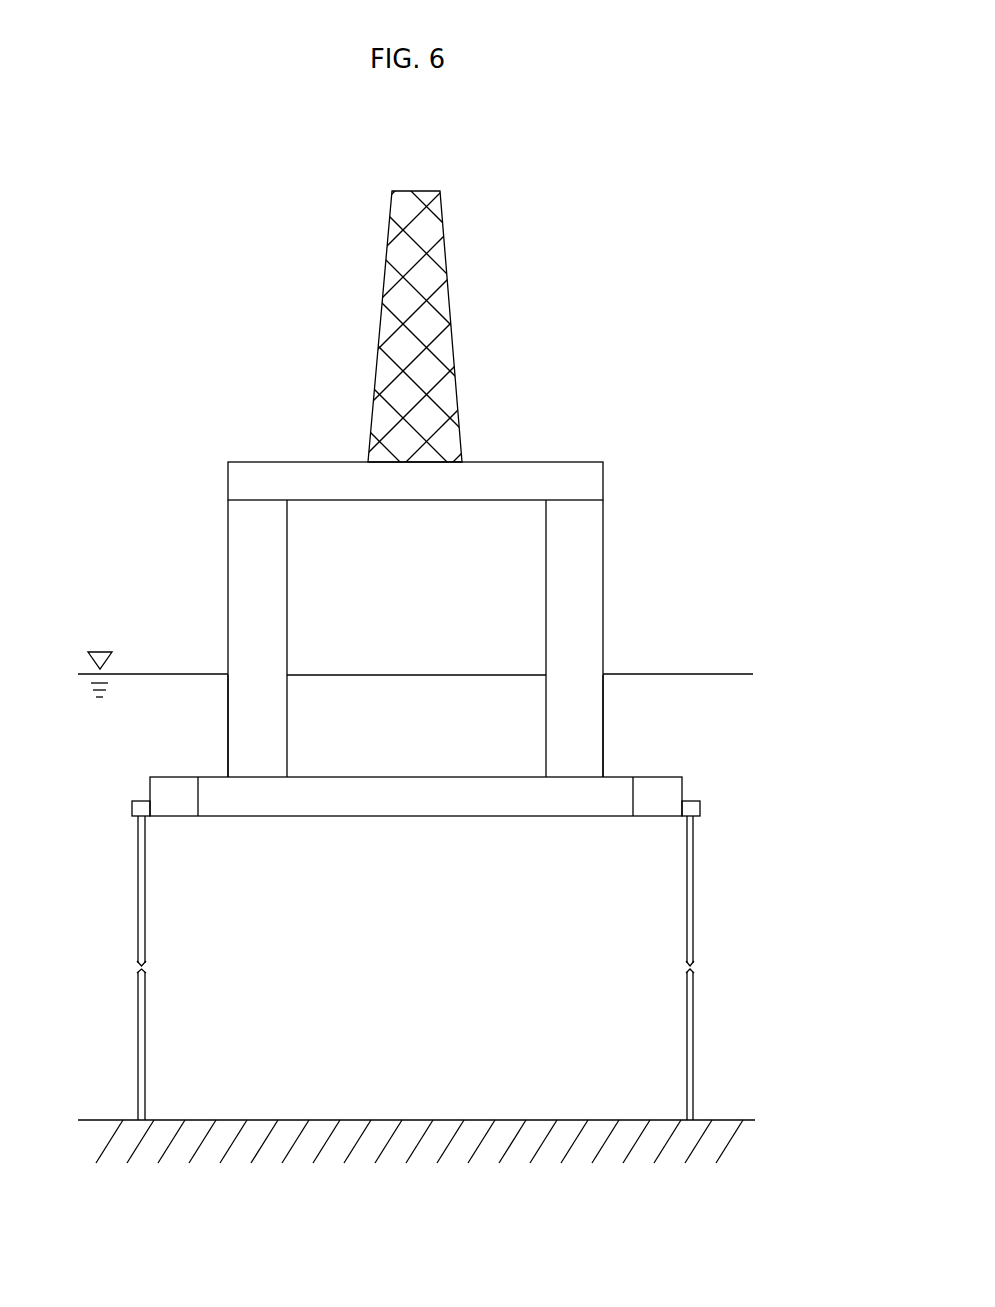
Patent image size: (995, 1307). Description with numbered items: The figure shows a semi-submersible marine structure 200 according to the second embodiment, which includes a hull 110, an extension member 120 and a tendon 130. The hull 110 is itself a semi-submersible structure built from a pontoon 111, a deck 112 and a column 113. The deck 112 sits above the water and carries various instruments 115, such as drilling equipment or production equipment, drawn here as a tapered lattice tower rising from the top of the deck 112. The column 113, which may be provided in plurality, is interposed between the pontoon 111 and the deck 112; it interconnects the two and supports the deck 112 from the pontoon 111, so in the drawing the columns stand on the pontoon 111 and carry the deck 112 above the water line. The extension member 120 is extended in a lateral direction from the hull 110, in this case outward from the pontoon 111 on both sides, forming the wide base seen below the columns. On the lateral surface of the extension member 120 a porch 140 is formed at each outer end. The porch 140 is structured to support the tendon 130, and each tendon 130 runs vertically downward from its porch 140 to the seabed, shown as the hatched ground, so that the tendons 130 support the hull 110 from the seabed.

The semi-submersible marine structure 200 is at (84, 165).
The hull 110 is at (776, 552).
The pontoon 111 is at (618, 777).
The deck 112 is at (603, 485).
The column 113 is at (603, 588).
The instruments 115 is at (449, 294).
The extension member 120 is at (657, 777).
The tendon 130 is at (693, 908).
The porch 140 is at (700, 806).